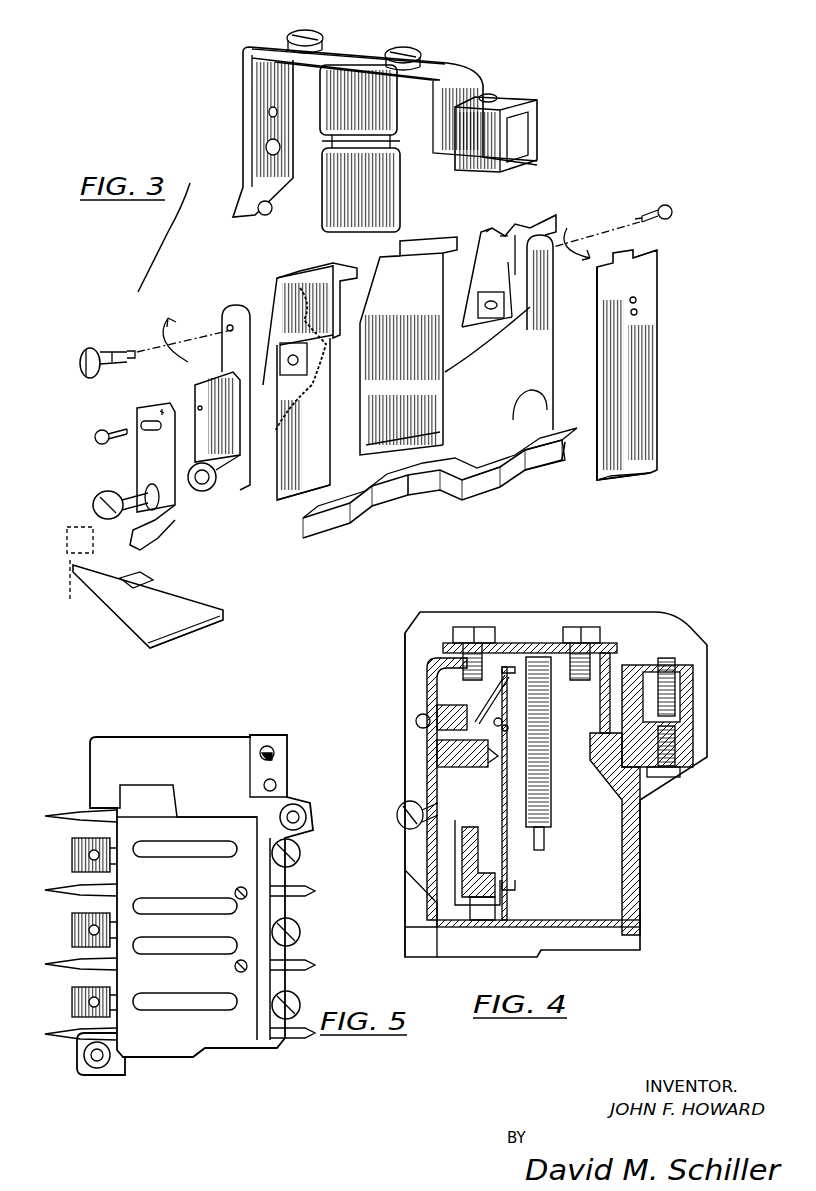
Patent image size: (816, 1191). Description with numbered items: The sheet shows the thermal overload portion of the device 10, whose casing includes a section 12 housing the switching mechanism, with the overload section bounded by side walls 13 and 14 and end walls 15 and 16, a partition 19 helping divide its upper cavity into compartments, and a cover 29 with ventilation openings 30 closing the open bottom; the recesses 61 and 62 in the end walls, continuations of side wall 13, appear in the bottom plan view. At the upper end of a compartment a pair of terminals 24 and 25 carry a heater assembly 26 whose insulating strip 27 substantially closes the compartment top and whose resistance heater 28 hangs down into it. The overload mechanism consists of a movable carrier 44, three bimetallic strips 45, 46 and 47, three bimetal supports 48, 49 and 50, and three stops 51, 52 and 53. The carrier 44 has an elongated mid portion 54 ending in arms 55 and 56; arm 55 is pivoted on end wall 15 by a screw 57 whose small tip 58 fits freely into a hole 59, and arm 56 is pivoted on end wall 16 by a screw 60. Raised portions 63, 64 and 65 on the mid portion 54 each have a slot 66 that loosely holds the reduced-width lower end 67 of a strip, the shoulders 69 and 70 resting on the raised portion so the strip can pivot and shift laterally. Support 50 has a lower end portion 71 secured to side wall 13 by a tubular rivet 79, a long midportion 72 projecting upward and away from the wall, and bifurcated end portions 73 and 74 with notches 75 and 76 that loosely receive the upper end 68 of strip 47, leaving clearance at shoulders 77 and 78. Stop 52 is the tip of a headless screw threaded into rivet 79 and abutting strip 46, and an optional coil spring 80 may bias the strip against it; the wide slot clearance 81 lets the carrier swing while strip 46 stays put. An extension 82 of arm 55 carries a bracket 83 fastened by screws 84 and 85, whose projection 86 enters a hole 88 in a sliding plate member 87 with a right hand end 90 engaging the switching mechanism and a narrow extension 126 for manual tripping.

In FIG. 4, the device 10 is at (616, 603).
In FIG. 5, the casing section 12 is at (197, 736).
In FIG. 4, the side wall 13 is at (440, 846).
In FIG. 5, the side wall 13 is at (80, 890).
In FIG. 4, the side wall 14 is at (632, 845).
In FIG. 5, the side wall 14 is at (275, 893).
In FIG. 5, the end wall 15 is at (205, 816).
In FIG. 5, the end wall 16 is at (195, 1053).
In FIG. 4, the partition 19 is at (405, 713).
In FIG. 3, the terminal 24 is at (512, 105).
In FIG. 4, the terminal 24 is at (676, 668).
In FIG. 3, the terminal 25 is at (243, 113).
In FIG. 4, the terminal 25 is at (425, 682).
In FIG. 3, the heater assembly 26 is at (441, 42).
In FIG. 4, the heater assembly 26 is at (538, 636).
In FIG. 3, the strip of insulating material 27 is at (358, 49).
In FIG. 4, the strip of insulating material 27 is at (516, 643).
In FIG. 3, the resistance heater 28 is at (316, 212).
In FIG. 4, the resistance heater 28 is at (545, 775).
In FIG. 4, the cover 29 is at (560, 928).
In FIG. 5, the cover 29 is at (226, 1033).
In FIG. 5, the openings 30 is at (200, 903).
In FIG. 3, the carrier 44 is at (394, 527).
In FIG. 3, the bimetallic strip 45 is at (320, 470).
In FIG. 3, the bimetallic strip 46 is at (416, 432).
In FIG. 4, the bimetallic strip 46 is at (510, 847).
In FIG. 3, the bimetallic strip 47 is at (594, 466).
In FIG. 3, the bimetal support 48 is at (268, 302).
In FIG. 3, the bimetal support 49 is at (378, 272).
In FIG. 4, the bimetal support 49 is at (488, 703).
In FIG. 3, the bimetal support 50 is at (476, 255).
In FIG. 3, the stop 51 is at (307, 368).
In FIG. 4, the stop 52 is at (486, 770).
In FIG. 3, the stop 53 is at (495, 327).
In FIG. 3, the mid portion 54 is at (418, 480).
In FIG. 4, the mid portion 54 is at (478, 897).
In FIG. 3, the arm 55 is at (226, 316).
In FIG. 3, the arm 56 is at (553, 280).
In FIG. 3, the screw 57 is at (90, 348).
In FIG. 3, the tip 58 is at (128, 350).
In FIG. 3, the hole 59 is at (230, 322).
In FIG. 3, the screw 60 is at (660, 206).
In FIG. 5, the recess 61 is at (148, 788).
In FIG. 5, the recess 62 is at (156, 1052).
In FIG. 3, the raised portion 63 is at (290, 472).
In FIG. 3, the raised portion 64 is at (458, 470).
In FIG. 3, the raised portion 65 is at (536, 445).
In FIG. 3, the slot 66 is at (545, 388).
In FIG. 3, the reduced-width end 67 is at (640, 472).
In FIG. 3, the reduced-width end 68 is at (636, 250).
In FIG. 3, the shoulder 69 is at (600, 472).
In FIG. 3, the shoulder 70 is at (655, 457).
In FIG. 3, the lower end portion 71 is at (478, 310).
In FIG. 3, the midportion 72 is at (472, 279).
In FIG. 3, the bifurcated end portion 73 is at (490, 228).
In FIG. 3, the bifurcated end portion 74 is at (548, 226).
In FIG. 3, the notch 75 is at (505, 232).
In FIG. 3, the notch 76 is at (516, 276).
In FIG. 3, the shoulder 77 is at (606, 264).
In FIG. 3, the shoulder 78 is at (660, 250).
In FIG. 4, the tubular rivet 79 is at (432, 795).
In FIG. 3, the coil spring 80 is at (328, 308).
In FIG. 4, the coil spring 80 is at (511, 712).
In FIG. 4, the lost motion clearance 81 is at (503, 925).
In FIG. 3, the extension 82 is at (192, 396).
In FIG. 3, the bracket 83 is at (148, 460).
In FIG. 3, the screw 84 is at (100, 500).
In FIG. 3, the screw 85 is at (108, 430).
In FIG. 3, the projection 86 is at (152, 530).
In FIG. 3, the plate member 87 is at (196, 604).
In FIG. 3, the hole 88 is at (146, 578).
In FIG. 3, the right hand end 90 is at (192, 630).
In FIG. 3, the extension 126 is at (78, 578).